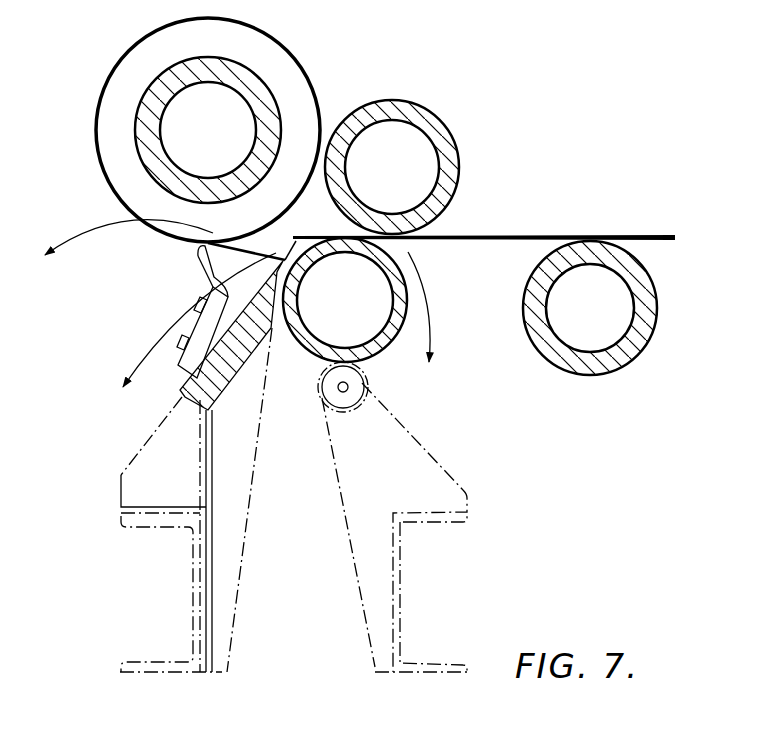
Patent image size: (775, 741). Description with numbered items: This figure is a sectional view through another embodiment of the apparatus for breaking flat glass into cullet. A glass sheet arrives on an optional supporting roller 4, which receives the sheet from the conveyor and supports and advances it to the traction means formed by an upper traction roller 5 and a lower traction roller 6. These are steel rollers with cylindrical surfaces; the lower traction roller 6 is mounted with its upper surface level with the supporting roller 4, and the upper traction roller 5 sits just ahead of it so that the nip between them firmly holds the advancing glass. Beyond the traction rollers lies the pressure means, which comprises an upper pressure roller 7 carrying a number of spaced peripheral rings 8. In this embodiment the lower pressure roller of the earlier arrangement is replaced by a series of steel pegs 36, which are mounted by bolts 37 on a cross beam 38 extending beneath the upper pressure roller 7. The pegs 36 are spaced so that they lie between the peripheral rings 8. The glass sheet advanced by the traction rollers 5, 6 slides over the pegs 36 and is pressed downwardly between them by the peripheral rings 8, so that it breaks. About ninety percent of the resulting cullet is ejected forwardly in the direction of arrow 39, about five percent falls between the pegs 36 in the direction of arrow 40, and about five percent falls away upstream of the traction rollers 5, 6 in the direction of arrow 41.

The supporting roller 4 is at (560, 357).
The upper traction roller 5 is at (372, 100).
The lower traction roller 6 is at (383, 338).
The upper pressure roller 7 is at (160, 77).
The peripheral rings 8 is at (120, 67).
The steel pegs 36 is at (202, 252).
The bolts 37 is at (185, 367).
The cross beam 38 is at (183, 394).
The arrow 39 is at (76, 233).
The arrow 40 is at (152, 342).
The arrow 41 is at (427, 302).